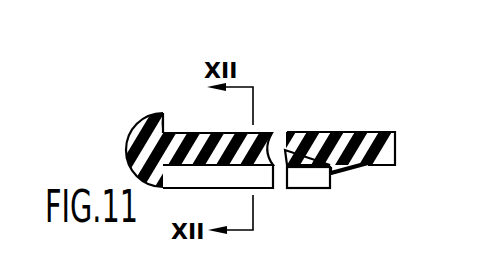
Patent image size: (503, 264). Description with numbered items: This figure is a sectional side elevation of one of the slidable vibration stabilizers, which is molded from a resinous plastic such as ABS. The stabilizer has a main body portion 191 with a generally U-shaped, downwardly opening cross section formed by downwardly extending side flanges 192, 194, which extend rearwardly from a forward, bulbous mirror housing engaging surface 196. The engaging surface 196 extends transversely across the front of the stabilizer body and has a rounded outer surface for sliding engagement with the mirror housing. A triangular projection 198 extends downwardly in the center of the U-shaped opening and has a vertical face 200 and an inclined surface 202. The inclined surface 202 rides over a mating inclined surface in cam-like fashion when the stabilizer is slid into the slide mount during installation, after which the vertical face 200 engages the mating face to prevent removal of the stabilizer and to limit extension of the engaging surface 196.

The main body portion 191 is at (295, 136).
The side flange 192 is at (394, 157).
The side flange 194 is at (187, 173).
The mirror housing engaging surface 196 is at (127, 137).
The triangular projection 198 is at (340, 181).
The vertical face 200 is at (329, 172).
The inclined surface 202 is at (347, 172).